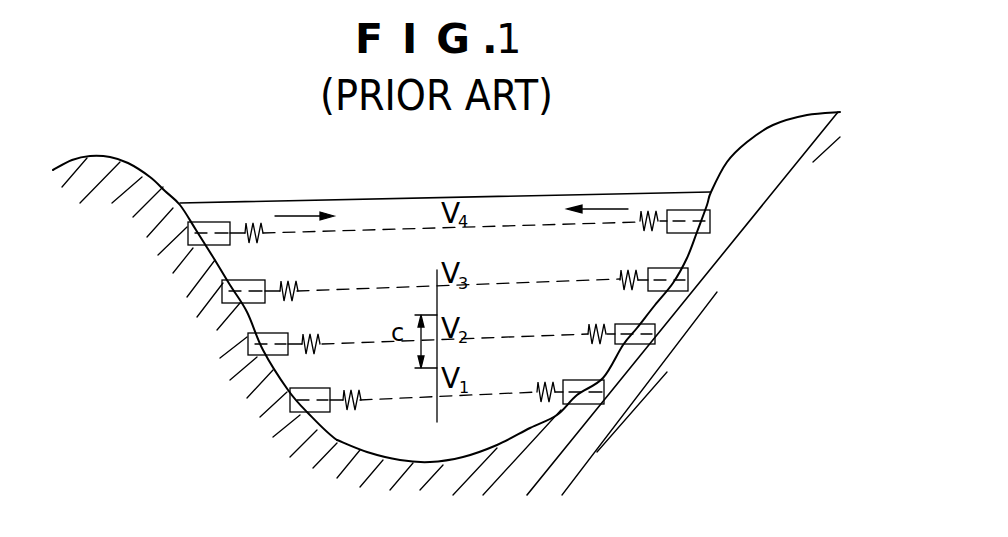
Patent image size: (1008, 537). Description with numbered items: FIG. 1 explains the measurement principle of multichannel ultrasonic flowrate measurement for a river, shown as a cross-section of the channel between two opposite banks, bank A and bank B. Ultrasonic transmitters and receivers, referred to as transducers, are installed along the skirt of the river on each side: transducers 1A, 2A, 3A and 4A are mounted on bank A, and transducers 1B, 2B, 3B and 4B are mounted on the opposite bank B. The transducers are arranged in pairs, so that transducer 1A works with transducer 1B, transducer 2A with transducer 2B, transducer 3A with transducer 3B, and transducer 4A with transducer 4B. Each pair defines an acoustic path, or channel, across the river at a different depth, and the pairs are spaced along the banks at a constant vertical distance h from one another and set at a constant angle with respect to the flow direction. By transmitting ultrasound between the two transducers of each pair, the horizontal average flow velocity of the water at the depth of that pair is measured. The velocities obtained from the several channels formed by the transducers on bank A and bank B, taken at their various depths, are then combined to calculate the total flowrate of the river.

The ultrasonic transducer 1A is at (290, 402).
The ultrasonic transducer 2A is at (248, 345).
The ultrasonic transducer 3A is at (222, 294).
The ultrasonic transducer 4A is at (186, 232).
The ultrasonic transducer 1B is at (605, 397).
The ultrasonic transducer 2B is at (655, 338).
The ultrasonic transducer 3B is at (688, 284).
The ultrasonic transducer 4B is at (703, 228).
The river bank A is at (275, 325).
The river bank B is at (588, 303).